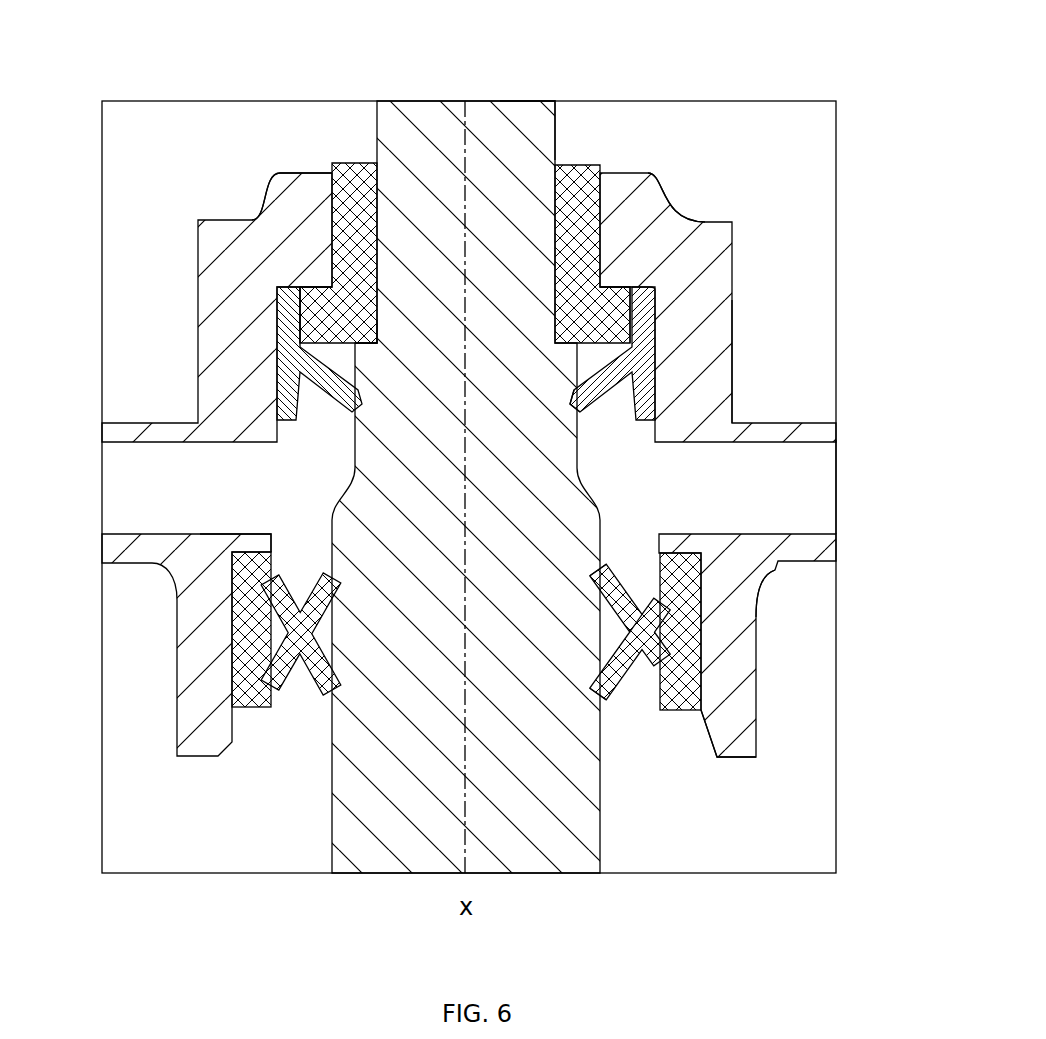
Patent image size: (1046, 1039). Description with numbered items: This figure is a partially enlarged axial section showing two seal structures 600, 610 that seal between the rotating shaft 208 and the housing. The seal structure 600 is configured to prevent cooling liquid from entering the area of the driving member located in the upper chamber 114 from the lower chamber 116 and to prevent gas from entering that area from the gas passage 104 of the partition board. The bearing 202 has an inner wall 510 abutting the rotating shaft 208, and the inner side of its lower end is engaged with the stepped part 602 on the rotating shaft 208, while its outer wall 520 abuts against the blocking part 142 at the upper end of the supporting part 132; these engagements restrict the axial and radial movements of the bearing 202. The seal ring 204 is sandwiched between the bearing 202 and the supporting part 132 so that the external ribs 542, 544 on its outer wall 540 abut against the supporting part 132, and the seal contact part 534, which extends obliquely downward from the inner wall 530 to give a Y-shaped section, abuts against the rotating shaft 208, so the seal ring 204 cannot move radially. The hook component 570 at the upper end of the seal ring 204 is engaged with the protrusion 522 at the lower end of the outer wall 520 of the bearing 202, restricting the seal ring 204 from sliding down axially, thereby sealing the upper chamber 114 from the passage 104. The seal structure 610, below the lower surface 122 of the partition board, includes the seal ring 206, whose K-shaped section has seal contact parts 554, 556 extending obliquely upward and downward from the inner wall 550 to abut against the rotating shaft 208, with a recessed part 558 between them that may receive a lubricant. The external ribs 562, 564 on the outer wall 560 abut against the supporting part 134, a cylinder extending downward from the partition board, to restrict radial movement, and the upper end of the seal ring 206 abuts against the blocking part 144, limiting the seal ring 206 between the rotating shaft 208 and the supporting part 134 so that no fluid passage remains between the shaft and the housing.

The passage 104 is at (481, 498).
The upper chamber 114 is at (469, 249).
The lower chamber 116 is at (508, 696).
The lower surface 122 is at (786, 614).
The supporting part 132 is at (217, 273).
The supporting part 134 is at (186, 640).
The blocking part 142 is at (283, 192).
The blocking part 144 is at (250, 537).
The bearing 202 is at (580, 230).
The seal ring 204 is at (284, 370).
The seal ring 206 is at (250, 712).
The rotating shaft 208 is at (530, 122).
The inner wall 510 is at (469, 461).
The outer wall 520 is at (356, 224).
The protrusion 522 is at (302, 290).
The inner wall 530 is at (606, 318).
The seal contact part 534 is at (577, 388).
The outer wall 540 is at (718, 307).
The external rib 542 is at (706, 276).
The external rib 544 is at (700, 372).
The inner wall 550 is at (580, 597).
The seal contact part 554 is at (603, 582).
The seal contact part 556 is at (600, 680).
The recessed part 558 is at (600, 617).
The outer wall 560 is at (703, 620).
The external rib 562 is at (756, 598).
The external rib 564 is at (708, 700).
The hook component 570 is at (569, 310).
The seal structure 600 is at (730, 132).
The stepped part 602 is at (358, 348).
The seal structure 610 is at (872, 496).